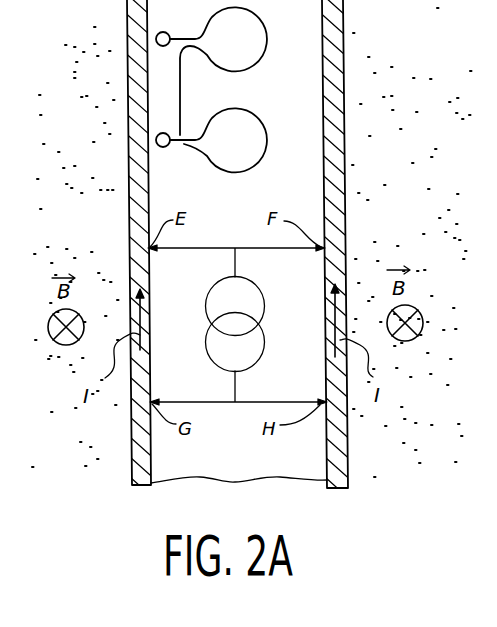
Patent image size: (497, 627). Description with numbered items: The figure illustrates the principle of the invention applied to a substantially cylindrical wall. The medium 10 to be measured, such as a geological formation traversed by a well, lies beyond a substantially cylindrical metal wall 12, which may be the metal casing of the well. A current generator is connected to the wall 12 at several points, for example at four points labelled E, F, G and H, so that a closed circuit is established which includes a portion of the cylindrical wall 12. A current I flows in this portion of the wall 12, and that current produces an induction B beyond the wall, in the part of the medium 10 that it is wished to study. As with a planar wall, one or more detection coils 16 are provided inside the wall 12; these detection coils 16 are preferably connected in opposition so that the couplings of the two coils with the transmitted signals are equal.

The medium 10 is at (104, 72).
The cylindrical metal wall 12 is at (343, 167).
The detection coils 16 is at (252, 100).